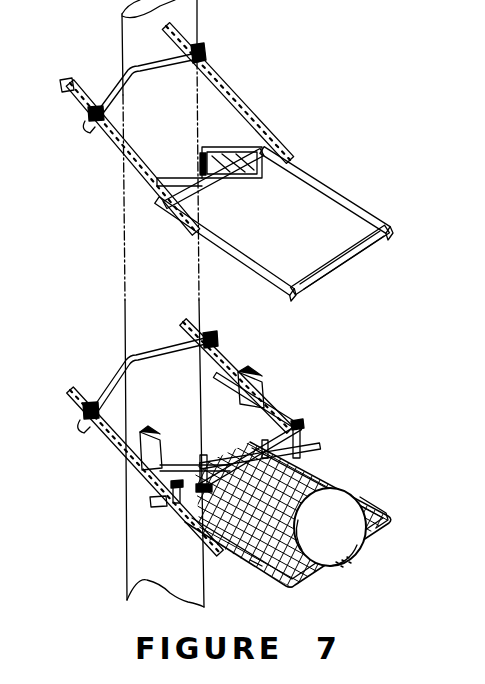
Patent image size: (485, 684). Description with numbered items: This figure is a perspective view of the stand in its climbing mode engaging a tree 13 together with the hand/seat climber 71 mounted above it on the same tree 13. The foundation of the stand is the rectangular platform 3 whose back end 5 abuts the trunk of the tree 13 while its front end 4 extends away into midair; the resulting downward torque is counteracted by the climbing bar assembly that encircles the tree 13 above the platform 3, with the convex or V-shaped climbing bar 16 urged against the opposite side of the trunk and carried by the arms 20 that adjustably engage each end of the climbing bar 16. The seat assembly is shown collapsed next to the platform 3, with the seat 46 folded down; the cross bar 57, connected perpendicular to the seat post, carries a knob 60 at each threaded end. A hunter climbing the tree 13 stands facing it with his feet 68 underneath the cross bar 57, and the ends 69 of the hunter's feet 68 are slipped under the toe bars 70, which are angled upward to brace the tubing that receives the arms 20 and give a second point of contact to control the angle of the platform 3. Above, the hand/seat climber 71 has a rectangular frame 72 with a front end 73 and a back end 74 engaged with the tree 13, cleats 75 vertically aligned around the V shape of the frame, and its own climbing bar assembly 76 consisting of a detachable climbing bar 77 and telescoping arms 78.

The platform 3 is at (301, 514).
The front end 4 is at (372, 537).
The back end 5 is at (207, 452).
The tree 13 is at (186, 29).
The climbing bar 16 is at (117, 382).
The arms 20 is at (228, 368).
The seat 46 is at (347, 512).
The cross bar 57 is at (278, 414).
The knob 60 is at (304, 426).
The hunter's feet 68 is at (257, 570).
The ends of hunter's feet 69 is at (150, 503).
The toe bars 70 is at (172, 468).
The hand/seat climber 71 is at (279, 207).
The rectangular frame 72 is at (335, 200).
The front end 73 is at (208, 183).
The back end 74 is at (337, 258).
The cleats 75 is at (165, 174).
The climbing bar assembly 76 is at (126, 178).
The climbing bar 77 is at (116, 88).
The telescoping arms 78 is at (232, 98).